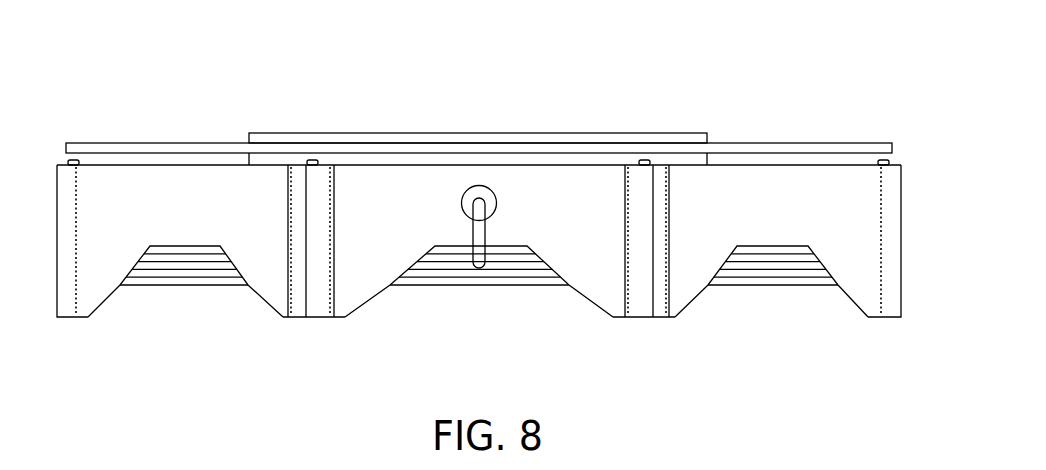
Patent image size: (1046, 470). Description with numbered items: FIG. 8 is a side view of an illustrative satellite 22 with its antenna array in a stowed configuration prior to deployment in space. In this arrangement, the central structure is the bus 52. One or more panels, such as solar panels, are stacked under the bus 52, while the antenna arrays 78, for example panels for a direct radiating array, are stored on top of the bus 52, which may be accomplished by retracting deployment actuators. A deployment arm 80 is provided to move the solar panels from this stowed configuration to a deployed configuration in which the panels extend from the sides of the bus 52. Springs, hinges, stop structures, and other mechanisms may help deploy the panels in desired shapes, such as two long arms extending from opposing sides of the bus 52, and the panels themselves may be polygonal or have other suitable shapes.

The tray assembly 22 is at (698, 77).
The bus 52 is at (902, 206).
The antenna arrays 78 is at (237, 120).
The deployment arm 80 is at (486, 224).